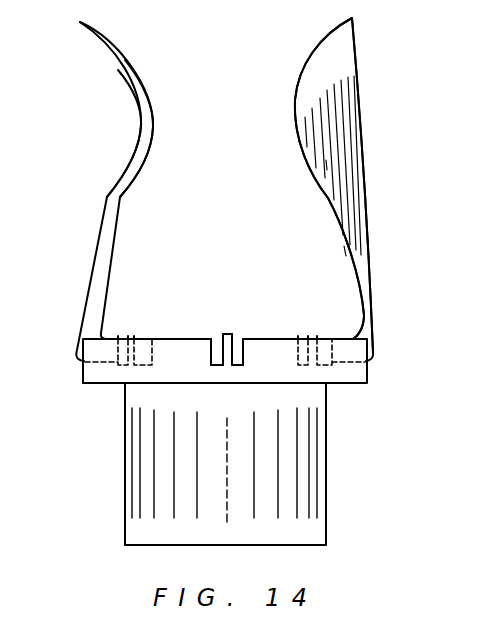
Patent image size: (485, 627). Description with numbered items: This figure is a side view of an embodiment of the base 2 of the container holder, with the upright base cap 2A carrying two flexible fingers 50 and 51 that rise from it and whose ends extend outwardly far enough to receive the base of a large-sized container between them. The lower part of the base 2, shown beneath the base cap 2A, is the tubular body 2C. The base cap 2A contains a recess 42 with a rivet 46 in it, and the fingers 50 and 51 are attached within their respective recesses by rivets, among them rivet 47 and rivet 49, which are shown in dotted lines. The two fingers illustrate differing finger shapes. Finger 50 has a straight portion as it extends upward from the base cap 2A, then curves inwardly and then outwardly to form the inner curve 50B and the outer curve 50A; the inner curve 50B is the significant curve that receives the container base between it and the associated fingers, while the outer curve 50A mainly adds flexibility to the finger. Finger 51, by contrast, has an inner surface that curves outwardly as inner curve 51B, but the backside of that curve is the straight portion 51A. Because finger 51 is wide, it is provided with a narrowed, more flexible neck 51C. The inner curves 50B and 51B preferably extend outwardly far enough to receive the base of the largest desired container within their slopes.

The base 2 is at (90, 494).
The base cap 2A is at (104, 375).
The tubular body 2C is at (327, 480).
The recess 42 is at (247, 345).
The rivet 46 is at (215, 345).
The rivet 47 is at (128, 330).
The retaining tab 49 is at (317, 337).
The flexible finger 50 is at (97, 253).
The outer curve 50A is at (138, 107).
The inner curve 50B is at (157, 142).
The flexible finger 51 is at (370, 242).
The straight portion 51A is at (365, 142).
The inner curve 51B is at (300, 163).
The neck 51C is at (365, 322).